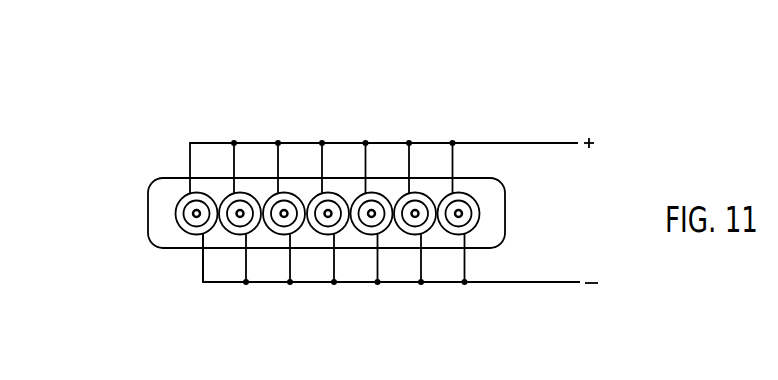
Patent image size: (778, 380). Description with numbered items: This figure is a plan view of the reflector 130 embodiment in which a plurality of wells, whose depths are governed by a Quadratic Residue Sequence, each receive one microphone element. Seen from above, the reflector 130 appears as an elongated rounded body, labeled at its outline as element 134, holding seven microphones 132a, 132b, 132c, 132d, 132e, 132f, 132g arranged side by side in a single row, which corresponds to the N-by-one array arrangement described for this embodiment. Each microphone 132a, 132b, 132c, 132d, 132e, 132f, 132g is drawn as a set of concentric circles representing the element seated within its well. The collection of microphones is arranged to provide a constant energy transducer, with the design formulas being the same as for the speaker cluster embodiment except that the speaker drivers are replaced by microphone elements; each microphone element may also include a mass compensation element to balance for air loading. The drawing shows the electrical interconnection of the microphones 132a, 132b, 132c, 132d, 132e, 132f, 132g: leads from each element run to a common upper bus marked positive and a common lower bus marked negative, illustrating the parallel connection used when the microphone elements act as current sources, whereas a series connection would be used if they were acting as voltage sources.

The reflector 130 is at (318, 214).
The housing 134 is at (148, 229).
The microphone 132a is at (185, 197).
The microphone 132b is at (233, 236).
The microphone 132c is at (273, 197).
The microphone 132d is at (318, 236).
The microphone 132e is at (358, 197).
The microphone 132f is at (407, 236).
The microphone 132g is at (447, 197).